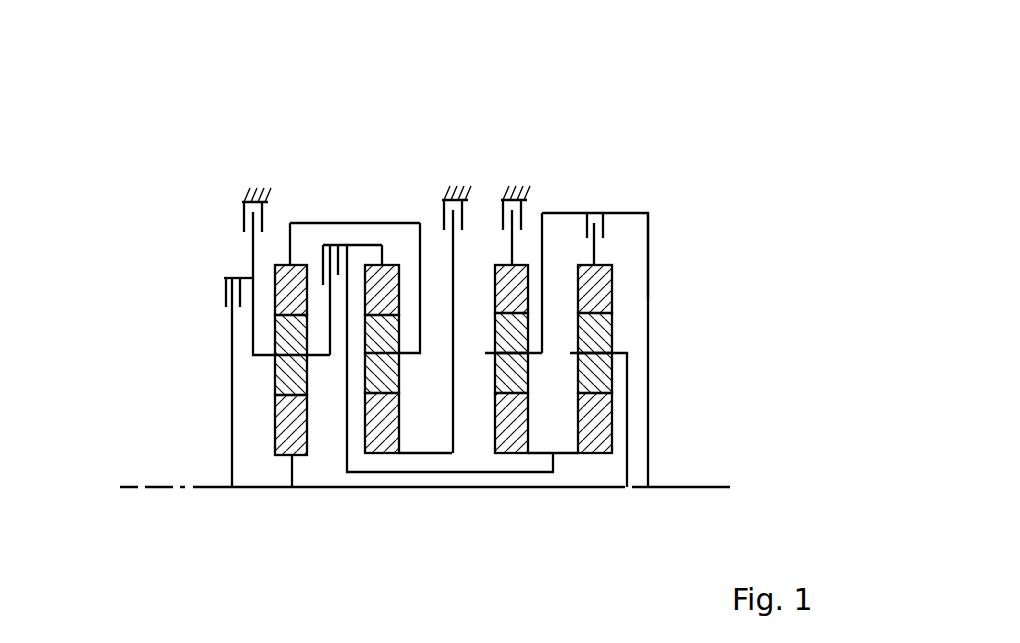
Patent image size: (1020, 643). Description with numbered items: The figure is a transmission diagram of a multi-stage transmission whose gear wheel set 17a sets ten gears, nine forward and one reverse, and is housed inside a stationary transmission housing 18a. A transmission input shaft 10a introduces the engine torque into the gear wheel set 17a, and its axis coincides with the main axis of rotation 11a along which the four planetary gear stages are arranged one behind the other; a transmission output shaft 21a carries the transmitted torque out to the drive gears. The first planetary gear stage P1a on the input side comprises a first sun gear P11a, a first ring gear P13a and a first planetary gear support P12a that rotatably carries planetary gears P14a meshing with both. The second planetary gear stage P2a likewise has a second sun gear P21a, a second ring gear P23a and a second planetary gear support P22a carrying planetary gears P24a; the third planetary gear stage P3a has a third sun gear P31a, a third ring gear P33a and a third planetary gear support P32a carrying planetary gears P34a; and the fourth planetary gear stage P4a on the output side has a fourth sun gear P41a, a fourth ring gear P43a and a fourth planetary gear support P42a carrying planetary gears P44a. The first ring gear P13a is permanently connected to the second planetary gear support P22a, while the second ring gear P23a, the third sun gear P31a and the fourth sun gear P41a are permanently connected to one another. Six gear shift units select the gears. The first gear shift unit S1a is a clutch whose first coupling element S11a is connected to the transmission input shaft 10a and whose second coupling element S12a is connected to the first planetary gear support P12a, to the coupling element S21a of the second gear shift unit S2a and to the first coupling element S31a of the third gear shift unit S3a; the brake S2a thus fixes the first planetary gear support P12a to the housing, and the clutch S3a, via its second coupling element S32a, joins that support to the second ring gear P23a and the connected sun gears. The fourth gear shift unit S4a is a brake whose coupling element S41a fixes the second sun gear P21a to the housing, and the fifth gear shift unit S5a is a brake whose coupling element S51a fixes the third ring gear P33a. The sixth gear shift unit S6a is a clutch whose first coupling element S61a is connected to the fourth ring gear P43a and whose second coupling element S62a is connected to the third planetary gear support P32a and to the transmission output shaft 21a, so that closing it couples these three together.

The transmission input shaft 10a is at (243, 488).
The main axis of rotation 11a is at (150, 490).
The gear wheel set 17a is at (698, 185).
The transmission housing 18a is at (243, 190).
The transmission output shaft 21a is at (688, 490).
The first gear shift unit S1a is at (232, 268).
The first rotatable coupling element of the first gear shift unit S11a is at (232, 312).
The second rotatable coupling element of the first gear shift unit S12a is at (226, 280).
The second gear shift unit S2a is at (246, 191).
The rotatable coupling element of the second gear shift unit S21a is at (251, 240).
The third gear shift unit S3a is at (330, 236).
The first rotatable coupling element of the third gear shift unit S31a is at (323, 285).
The second rotatable coupling element of the third gear shift unit S32a is at (340, 248).
The fourth gear shift unit S4a is at (460, 178).
The rotatable coupling element of the fourth gear shift unit S41a is at (452, 258).
The fifth gear shift unit S5a is at (520, 178).
The rotatable coupling element of the fifth gear shift unit S51a is at (505, 228).
The sixth gear shift unit S6a is at (613, 202).
The first rotatable coupling element of the sixth gear shift unit S61a is at (598, 252).
The second rotatable coupling element of the sixth gear shift unit S62a is at (604, 232).
The first planetary gear stage P1a is at (266, 319).
The first sun gear P11a is at (285, 423).
The first planetary gear support P12a is at (330, 360).
The first ring gear P13a is at (282, 253).
The planetary gears of the first planetary gear stage P14a is at (285, 377).
The second planetary gear stage P2a is at (410, 372).
The second sun gear P21a is at (379, 445).
The second planetary gear support P22a is at (407, 362).
The second ring gear P23a is at (456, 330).
The planetary gears of the second planetary gear stage P24a is at (373, 377).
The third planetary gear stage P3a is at (552, 343).
The third sun gear P31a is at (512, 425).
The third planetary gear support P32a is at (533, 357).
The third ring gear P33a is at (527, 239).
The planetary gears of the third planetary gear stage P34a is at (472, 412).
The fourth planetary gear stage P4a is at (676, 293).
The fourth sun gear P41a is at (606, 411).
The fourth planetary gear support P42a is at (628, 349).
The fourth ring gear P43a is at (606, 287).
The planetary gears of the fourth planetary gear stage P44a is at (606, 319).